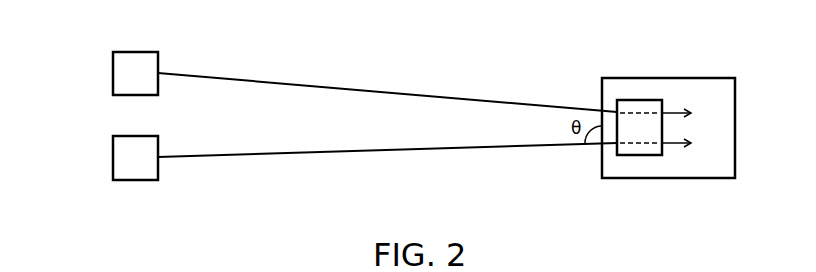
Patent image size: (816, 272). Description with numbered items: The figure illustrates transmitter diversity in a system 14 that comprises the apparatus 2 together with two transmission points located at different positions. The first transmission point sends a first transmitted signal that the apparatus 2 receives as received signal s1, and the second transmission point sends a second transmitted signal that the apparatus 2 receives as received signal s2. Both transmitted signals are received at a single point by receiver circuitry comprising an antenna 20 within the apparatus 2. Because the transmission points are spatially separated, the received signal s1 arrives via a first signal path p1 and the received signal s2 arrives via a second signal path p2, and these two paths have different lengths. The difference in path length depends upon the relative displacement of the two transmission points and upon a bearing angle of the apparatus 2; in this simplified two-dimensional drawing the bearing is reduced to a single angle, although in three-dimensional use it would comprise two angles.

The apparatus 2 is at (678, 78).
The antenna 20 is at (640, 157).
The system 14 is at (120, 219).